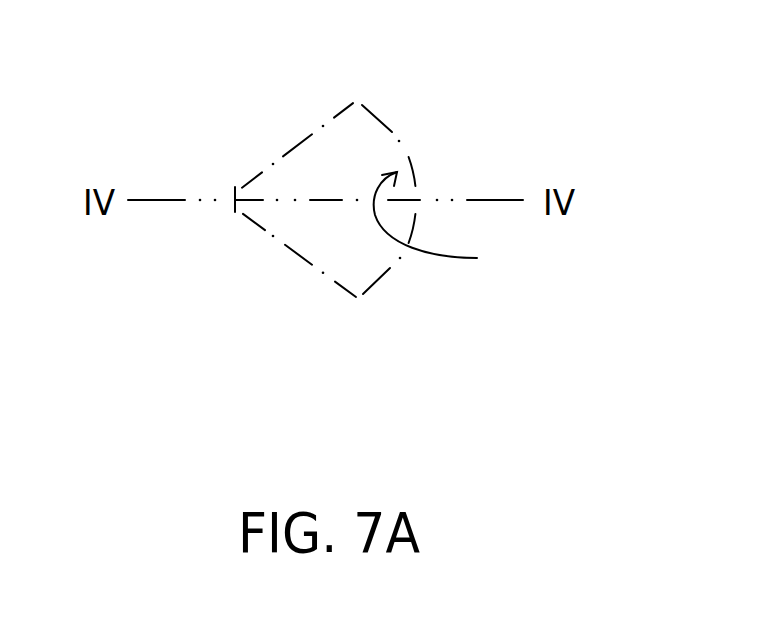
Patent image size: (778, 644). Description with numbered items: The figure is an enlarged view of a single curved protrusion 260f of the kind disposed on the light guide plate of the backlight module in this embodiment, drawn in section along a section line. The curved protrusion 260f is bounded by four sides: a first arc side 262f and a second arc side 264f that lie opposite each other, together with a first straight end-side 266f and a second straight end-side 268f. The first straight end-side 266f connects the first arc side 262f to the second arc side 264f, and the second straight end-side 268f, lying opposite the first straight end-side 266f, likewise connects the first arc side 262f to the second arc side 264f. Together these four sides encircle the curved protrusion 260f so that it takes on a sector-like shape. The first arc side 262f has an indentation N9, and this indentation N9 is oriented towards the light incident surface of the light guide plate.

The curved protrusion 260f is at (341, 226).
The first arc side 262f is at (407, 154).
The second arc side 264f is at (233, 205).
The first straight end-side 266f is at (322, 128).
The second straight end-side 268f is at (273, 236).
The indentation N9 is at (443, 226).